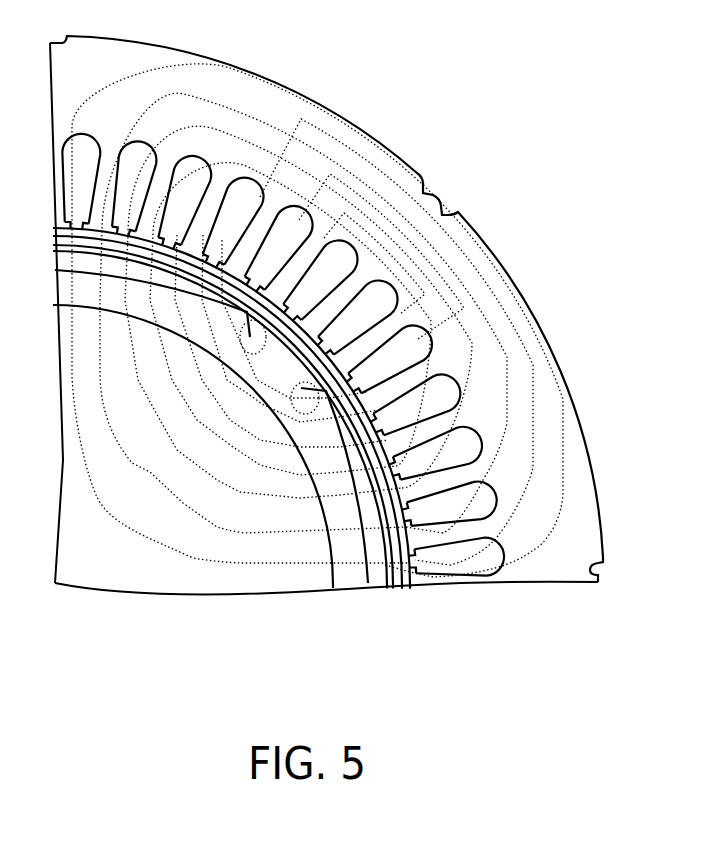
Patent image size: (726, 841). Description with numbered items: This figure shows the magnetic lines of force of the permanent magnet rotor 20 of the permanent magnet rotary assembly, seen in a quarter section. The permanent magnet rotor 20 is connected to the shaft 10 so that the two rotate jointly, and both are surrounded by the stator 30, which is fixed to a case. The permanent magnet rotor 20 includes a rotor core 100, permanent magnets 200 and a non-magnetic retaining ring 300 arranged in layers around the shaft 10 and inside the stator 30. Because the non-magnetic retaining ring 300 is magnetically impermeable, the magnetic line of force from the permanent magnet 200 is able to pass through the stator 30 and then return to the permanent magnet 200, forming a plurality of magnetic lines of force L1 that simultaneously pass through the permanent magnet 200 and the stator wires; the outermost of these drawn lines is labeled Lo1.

The shaft 10 is at (205, 577).
The permanent magnet rotor 20 is at (261, 462).
The rotor core 100 is at (345, 573).
The permanent magnet 200 is at (375, 573).
The non-magnetic retaining ring 300 is at (297, 648).
The stator 30 is at (535, 565).
The magnetic line of force L1 is at (377, 261).
The outermost magnetic flux line Lo1 is at (575, 493).